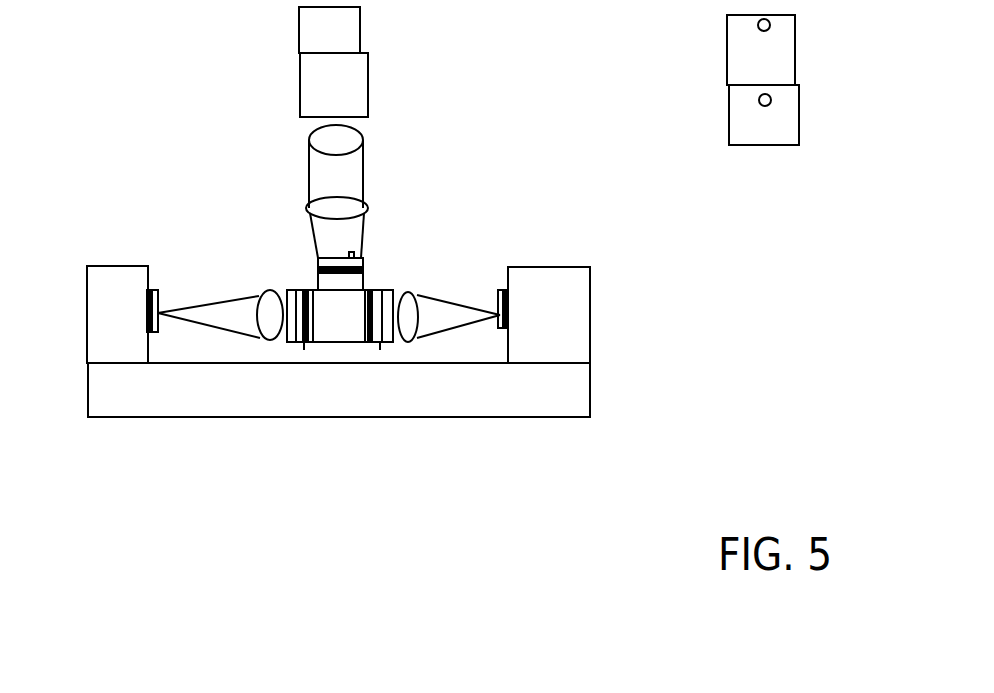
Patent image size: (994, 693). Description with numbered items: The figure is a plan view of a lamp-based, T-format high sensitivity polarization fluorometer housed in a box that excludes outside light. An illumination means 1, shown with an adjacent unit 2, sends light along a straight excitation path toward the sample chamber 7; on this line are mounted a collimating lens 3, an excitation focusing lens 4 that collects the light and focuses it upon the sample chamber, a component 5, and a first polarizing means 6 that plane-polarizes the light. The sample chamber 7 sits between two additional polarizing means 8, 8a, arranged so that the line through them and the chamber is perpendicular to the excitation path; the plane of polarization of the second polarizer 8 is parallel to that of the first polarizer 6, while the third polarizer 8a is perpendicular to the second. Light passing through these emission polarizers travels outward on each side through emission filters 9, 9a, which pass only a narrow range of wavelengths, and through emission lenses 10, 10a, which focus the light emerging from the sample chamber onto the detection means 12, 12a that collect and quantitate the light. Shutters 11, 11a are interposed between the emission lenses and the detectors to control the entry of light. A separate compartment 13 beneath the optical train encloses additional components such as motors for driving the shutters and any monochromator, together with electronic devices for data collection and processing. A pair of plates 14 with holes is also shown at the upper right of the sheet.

The illumination means 1 is at (329, 30).
The power supply / driver 2 is at (334, 85).
The collimating lens 3 is at (336, 166).
The excitation focusing lens 4 is at (337, 226).
The filter holder 5 is at (363, 258).
The first polarizing means 6 is at (363, 285).
The sample chamber 7 is at (340, 316).
The second polarizing means 8 is at (377, 342).
The third polarizing means 8a is at (305, 342).
The emission filter 9 is at (384, 342).
The emission filter 9a is at (291, 342).
The emission lens 10 is at (418, 296).
The emission lens 10a is at (268, 297).
The shutter 11 is at (503, 289).
The shutter 11a is at (157, 287).
The detection means 12 is at (549, 315).
The detection means 12a is at (117, 314).
The separate compartment 13 is at (339, 390).
The mounting plates with holes 14 is at (760, 97).